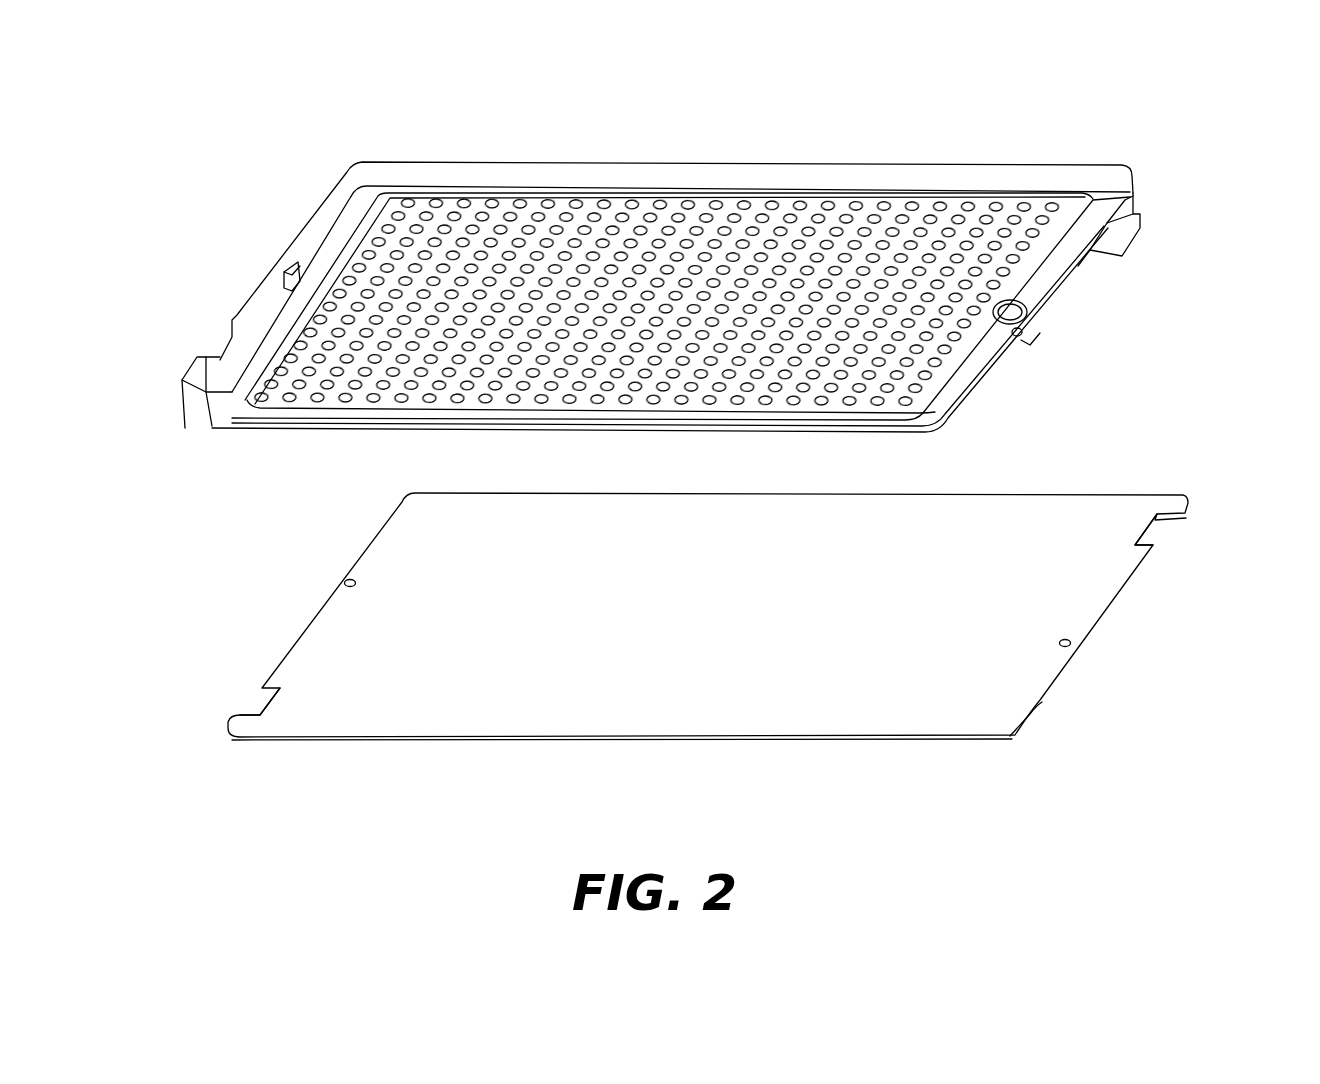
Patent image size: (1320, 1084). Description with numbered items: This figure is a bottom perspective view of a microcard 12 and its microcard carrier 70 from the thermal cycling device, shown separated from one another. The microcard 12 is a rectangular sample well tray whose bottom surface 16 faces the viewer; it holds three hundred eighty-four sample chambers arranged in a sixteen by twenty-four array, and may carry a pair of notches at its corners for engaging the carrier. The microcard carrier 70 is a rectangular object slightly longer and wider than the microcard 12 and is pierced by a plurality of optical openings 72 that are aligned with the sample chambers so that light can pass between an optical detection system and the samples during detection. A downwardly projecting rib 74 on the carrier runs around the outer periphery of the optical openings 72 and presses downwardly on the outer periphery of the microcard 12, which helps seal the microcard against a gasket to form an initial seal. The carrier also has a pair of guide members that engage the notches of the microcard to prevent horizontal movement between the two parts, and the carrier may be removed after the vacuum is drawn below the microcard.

The microcard carrier 70 is at (685, 266).
The optical openings 72 is at (990, 213).
The downwardly projecting rib 74 is at (327, 270).
The microcard 12 is at (727, 588).
The bottom surface 16 is at (1030, 508).